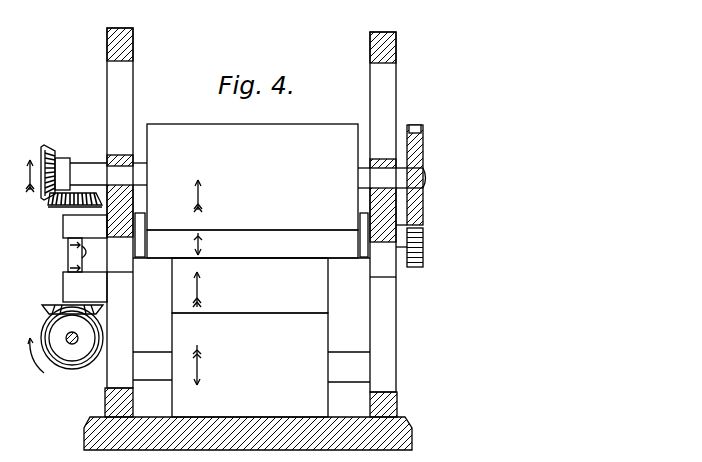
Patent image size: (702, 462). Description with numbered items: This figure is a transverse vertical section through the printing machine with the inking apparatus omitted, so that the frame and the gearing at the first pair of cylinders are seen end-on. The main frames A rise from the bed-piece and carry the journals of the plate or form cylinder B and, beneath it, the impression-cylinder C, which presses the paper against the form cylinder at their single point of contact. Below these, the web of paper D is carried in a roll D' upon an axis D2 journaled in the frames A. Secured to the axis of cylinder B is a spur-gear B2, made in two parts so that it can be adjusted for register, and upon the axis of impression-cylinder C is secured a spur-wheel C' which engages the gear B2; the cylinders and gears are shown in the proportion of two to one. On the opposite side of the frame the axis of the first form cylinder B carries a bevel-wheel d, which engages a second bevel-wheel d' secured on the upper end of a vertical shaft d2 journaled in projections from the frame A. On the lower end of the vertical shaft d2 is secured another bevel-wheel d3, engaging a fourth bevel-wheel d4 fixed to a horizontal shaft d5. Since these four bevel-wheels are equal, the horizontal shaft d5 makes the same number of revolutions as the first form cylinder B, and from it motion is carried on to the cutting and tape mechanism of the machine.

The main frames A is at (248, 239).
The plate or form cylinders B is at (279, 177).
The impression-cylinders C is at (251, 235).
The web of paper D is at (251, 285).
The roll D' is at (230, 365).
The axis D2 is at (349, 367).
The spur-gear B2 is at (423, 138).
The spur-wheel C' is at (418, 247).
The bevel-wheel d is at (74, 172).
The bevel-wheel d' is at (77, 215).
The vertical shaft d2 is at (85, 270).
The bevel-wheel d3 is at (58, 306).
The bevel-wheel d4 is at (86, 328).
The horizontal shaft d5 is at (67, 342).